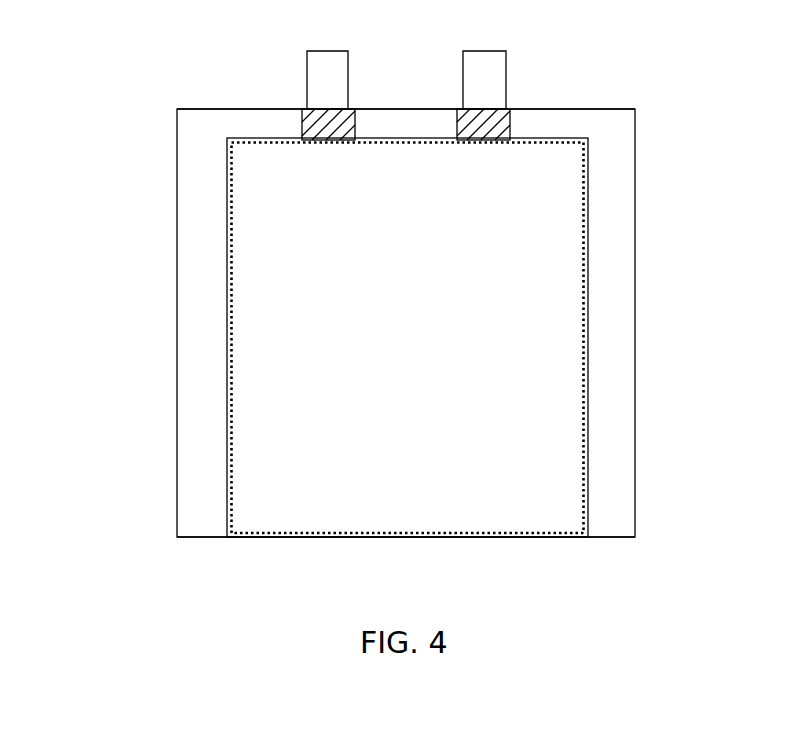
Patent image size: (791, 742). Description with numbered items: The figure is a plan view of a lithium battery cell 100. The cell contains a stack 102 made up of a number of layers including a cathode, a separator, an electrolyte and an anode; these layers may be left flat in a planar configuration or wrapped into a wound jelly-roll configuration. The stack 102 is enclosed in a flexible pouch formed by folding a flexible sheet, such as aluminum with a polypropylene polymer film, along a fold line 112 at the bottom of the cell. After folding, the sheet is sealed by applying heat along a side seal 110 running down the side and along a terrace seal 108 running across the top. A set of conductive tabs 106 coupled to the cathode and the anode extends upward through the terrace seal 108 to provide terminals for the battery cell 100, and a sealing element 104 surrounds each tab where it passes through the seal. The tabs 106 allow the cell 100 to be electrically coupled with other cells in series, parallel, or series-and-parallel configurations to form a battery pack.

The lithium battery cell 100 is at (177, 103).
The stack 102 is at (407, 337).
The tab sealing film 104 is at (470, 139).
The conductive tabs 106 is at (463, 51).
The terrace seal 108 is at (537, 109).
The side seal 110 is at (176, 320).
The fold line 112 is at (470, 537).